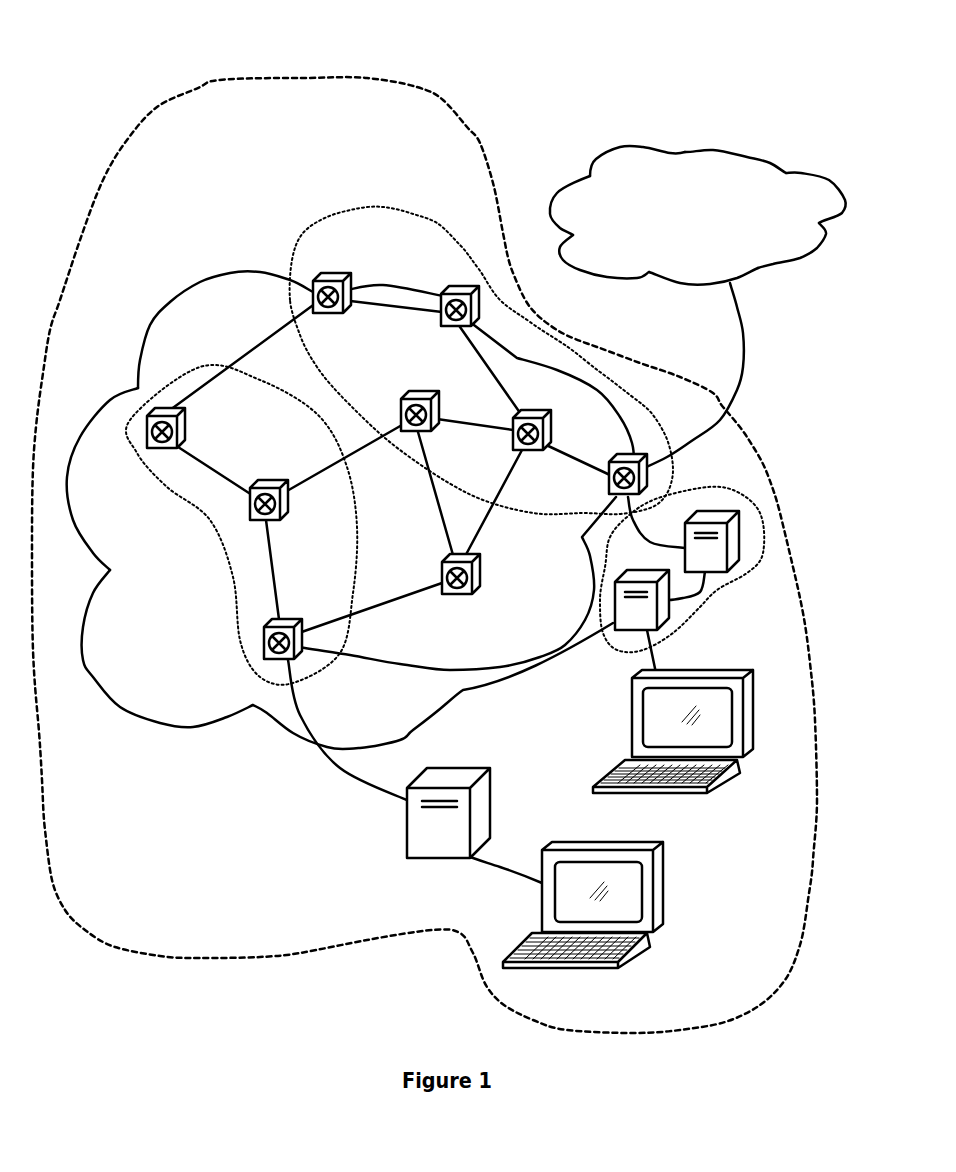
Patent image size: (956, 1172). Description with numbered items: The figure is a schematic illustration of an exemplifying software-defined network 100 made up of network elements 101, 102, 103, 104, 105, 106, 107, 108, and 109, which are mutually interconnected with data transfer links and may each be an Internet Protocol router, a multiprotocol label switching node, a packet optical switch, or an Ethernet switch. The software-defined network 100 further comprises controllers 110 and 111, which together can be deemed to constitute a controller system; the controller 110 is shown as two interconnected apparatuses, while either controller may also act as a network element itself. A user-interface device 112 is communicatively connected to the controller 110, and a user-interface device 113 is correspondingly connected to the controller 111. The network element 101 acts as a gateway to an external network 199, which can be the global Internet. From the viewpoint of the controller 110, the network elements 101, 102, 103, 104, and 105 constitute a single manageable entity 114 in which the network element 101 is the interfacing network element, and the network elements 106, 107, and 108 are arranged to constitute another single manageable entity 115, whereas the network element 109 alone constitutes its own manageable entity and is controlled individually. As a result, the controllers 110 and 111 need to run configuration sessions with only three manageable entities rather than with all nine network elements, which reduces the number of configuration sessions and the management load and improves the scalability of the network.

The software-defined network 100 is at (220, 80).
The network element 101 is at (609, 478).
The network element 102 is at (513, 437).
The network element 103 is at (465, 288).
The network element 104 is at (402, 410).
The network element 105 is at (333, 270).
The network element 106 is at (287, 626).
The network element 107 is at (266, 487).
The network element 108 is at (178, 432).
The network element 109 is at (460, 595).
The controller 110 is at (603, 640).
The controller 111 is at (407, 840).
The user-interface device 112 is at (740, 680).
The user-interface device 113 is at (663, 892).
The manageable entity 114 is at (303, 238).
The manageable entity 115 is at (232, 578).
The external network 199 is at (717, 226).